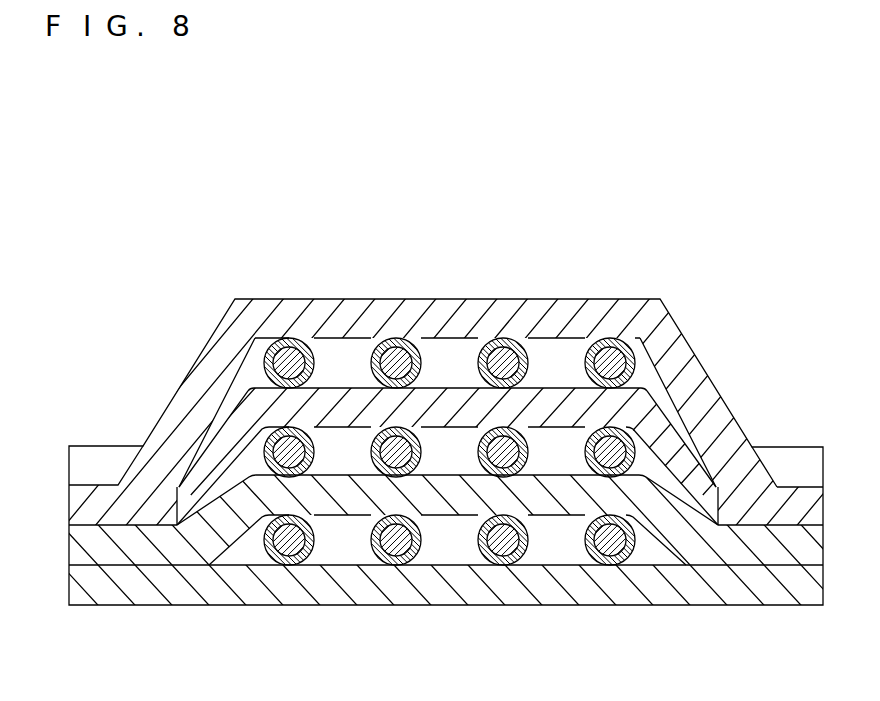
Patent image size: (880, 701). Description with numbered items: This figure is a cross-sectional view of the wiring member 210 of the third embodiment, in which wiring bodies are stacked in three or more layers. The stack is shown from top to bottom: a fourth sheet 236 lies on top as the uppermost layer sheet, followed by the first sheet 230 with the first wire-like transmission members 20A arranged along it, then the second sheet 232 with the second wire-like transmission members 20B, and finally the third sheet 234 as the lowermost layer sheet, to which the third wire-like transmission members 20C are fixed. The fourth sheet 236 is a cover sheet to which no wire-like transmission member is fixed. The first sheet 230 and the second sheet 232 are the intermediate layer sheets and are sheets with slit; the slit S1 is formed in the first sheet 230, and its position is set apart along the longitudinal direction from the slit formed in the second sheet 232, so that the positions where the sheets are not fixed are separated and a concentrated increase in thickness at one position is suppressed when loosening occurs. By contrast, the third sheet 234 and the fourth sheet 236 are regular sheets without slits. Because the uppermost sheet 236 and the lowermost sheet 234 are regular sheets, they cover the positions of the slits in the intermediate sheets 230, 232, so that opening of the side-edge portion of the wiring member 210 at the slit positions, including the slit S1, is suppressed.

The wiring member 210 is at (187, 174).
The fourth sheet 236 is at (346, 312).
The first wire-like transmission member 20A is at (485, 347).
The first sheet 230 is at (547, 405).
The second wire-like transmission member 20B is at (370, 458).
The third wire-like transmission member 20C is at (480, 551).
The second sheet 232 is at (546, 500).
The third sheet 234 is at (630, 586).
The slit S1 is at (156, 527).